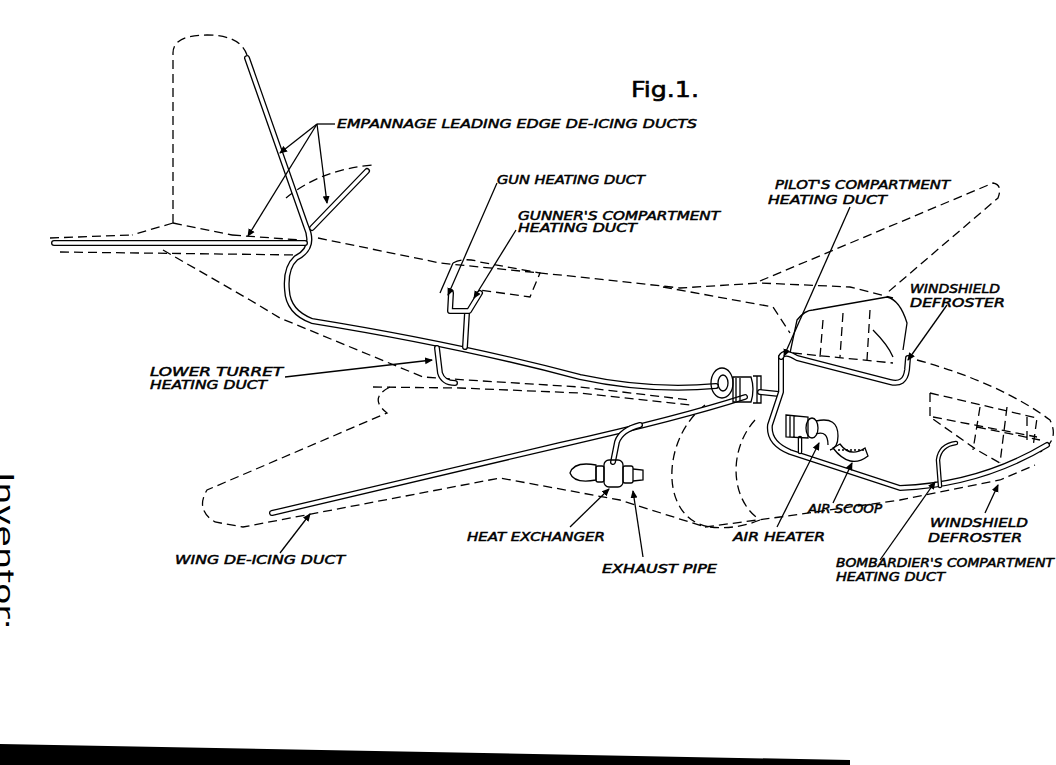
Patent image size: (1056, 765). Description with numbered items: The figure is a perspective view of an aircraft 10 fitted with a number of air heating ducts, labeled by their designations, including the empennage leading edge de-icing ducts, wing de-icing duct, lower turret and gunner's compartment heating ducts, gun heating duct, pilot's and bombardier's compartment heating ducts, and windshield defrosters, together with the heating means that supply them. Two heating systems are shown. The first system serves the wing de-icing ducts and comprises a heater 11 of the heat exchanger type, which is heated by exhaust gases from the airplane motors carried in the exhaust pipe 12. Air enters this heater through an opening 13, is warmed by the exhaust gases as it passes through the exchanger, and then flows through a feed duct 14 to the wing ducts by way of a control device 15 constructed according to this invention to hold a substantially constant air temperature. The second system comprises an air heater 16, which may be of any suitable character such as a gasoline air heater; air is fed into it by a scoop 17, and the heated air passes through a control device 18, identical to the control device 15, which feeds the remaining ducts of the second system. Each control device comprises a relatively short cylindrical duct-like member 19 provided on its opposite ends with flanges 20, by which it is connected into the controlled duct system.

The aircraft 10 is at (204, 293).
The heater 11 is at (620, 462).
The exhaust pipe 12 is at (639, 475).
The opening 13 is at (615, 492).
The feed duct 14 is at (700, 427).
The control device 15 is at (727, 368).
The air heater 16 is at (830, 430).
The scoop 17 is at (862, 450).
The control device 18 is at (818, 422).
The cylindrical duct-like member 19 is at (738, 376).
The flanges 20 is at (756, 375).